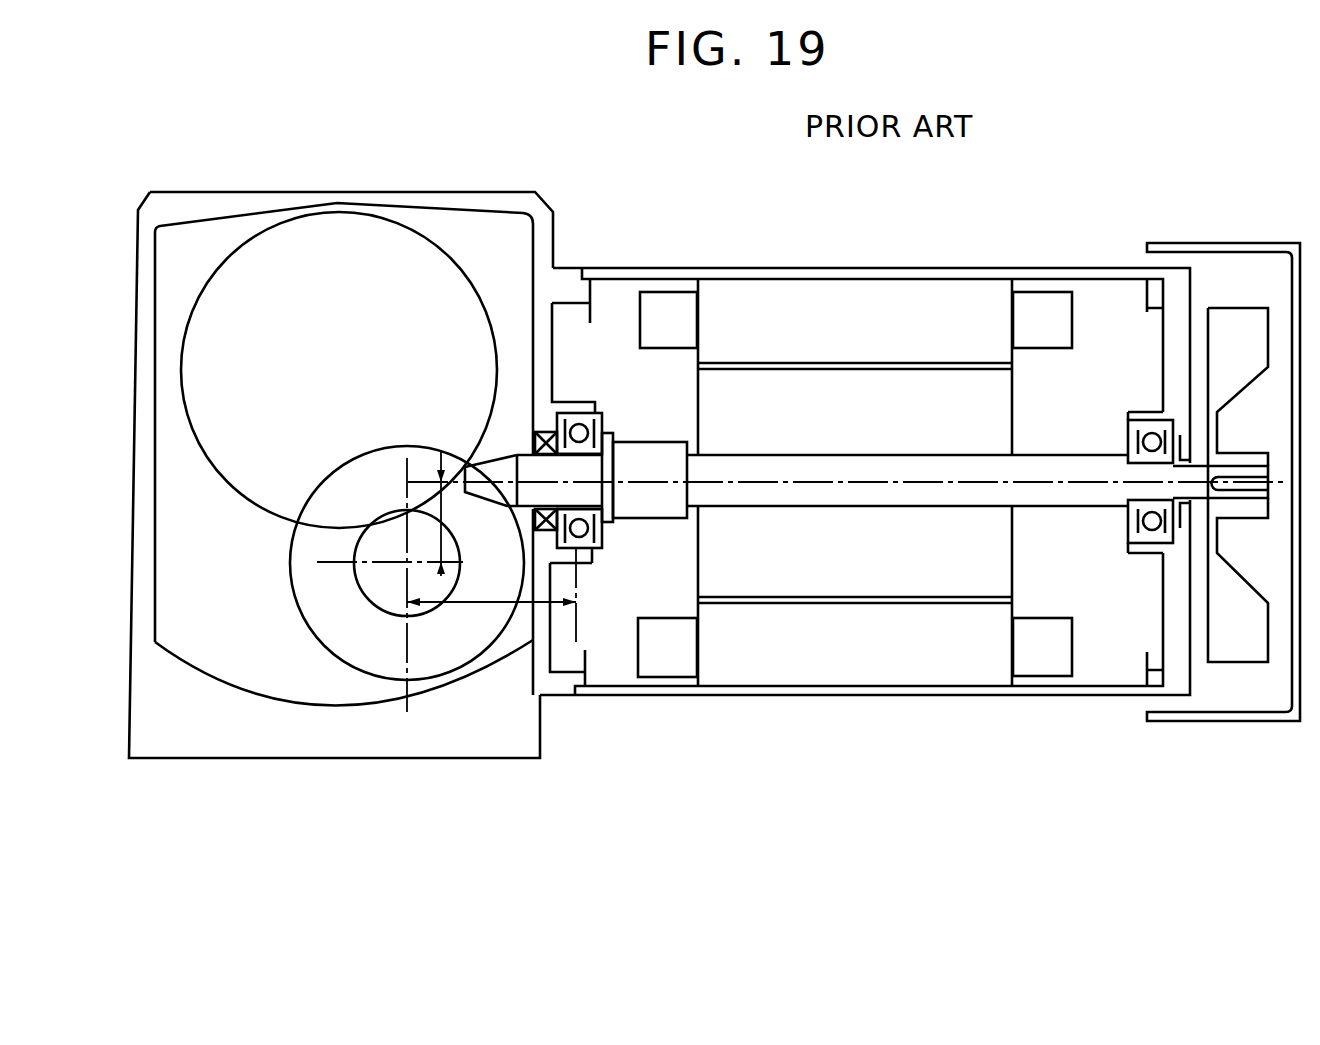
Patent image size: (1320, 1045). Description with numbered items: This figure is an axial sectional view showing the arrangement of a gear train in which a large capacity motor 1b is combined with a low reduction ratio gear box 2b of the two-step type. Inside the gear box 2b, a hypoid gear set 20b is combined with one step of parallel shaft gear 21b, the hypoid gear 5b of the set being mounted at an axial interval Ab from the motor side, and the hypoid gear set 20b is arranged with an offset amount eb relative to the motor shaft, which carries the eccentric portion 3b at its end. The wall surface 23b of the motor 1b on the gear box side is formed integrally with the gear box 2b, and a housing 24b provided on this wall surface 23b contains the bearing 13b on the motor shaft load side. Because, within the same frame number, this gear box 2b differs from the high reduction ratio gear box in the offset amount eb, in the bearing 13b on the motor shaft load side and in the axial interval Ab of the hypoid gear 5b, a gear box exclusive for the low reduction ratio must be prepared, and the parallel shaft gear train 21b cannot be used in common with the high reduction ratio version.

The motor 1b is at (866, 272).
The gear box 2b is at (467, 202).
The eccentric shaft 3b is at (487, 453).
The hypoid gear 5b is at (444, 652).
The bearing 13b is at (585, 547).
The hypoid gear set 20b is at (484, 532).
The parallel shaft gear 21b is at (228, 572).
The wall surface 23b is at (543, 345).
The housing 24b is at (577, 407).
The axial interval Ab is at (477, 610).
The offset amount eb is at (443, 522).